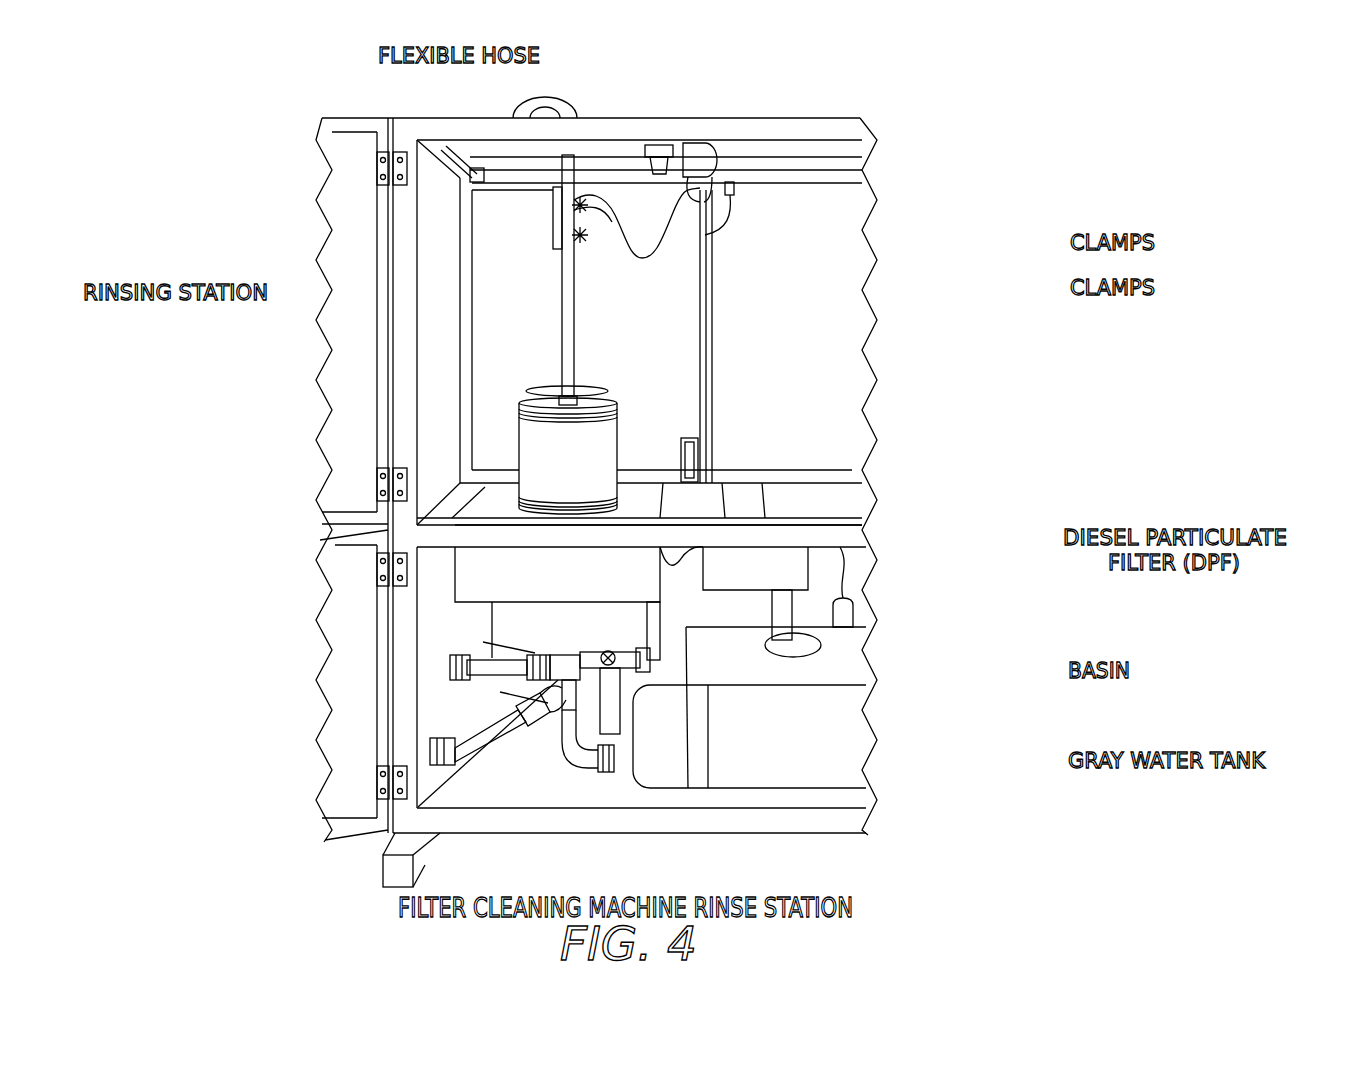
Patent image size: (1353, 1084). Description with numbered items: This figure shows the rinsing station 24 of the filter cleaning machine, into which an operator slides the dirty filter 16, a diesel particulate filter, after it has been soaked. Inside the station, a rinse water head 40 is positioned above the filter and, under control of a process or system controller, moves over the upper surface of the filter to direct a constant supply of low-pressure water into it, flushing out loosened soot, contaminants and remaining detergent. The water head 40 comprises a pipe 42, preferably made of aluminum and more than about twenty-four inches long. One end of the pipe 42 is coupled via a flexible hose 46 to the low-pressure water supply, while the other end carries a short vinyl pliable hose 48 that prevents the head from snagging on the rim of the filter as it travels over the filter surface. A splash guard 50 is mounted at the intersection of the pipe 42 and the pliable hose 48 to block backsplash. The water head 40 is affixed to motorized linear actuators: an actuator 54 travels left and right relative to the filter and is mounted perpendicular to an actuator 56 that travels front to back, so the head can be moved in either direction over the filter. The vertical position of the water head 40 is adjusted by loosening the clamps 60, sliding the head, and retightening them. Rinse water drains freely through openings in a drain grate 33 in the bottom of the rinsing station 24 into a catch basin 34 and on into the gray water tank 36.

The dirty filter 16 is at (567, 460).
The rinsing station 24 is at (510, 330).
The drain grate 33 is at (632, 522).
The catch basin 34 is at (567, 572).
The gray water tank 36 is at (777, 747).
The rinse water head 40 is at (923, 335).
The pipe 42 is at (567, 290).
The flexible hose 46 is at (550, 93).
The pliable hose 48 is at (578, 398).
The splash guard 50 is at (603, 345).
The actuator 54 is at (588, 178).
The actuator 56 is at (623, 150).
The clamps 60 is at (587, 205).